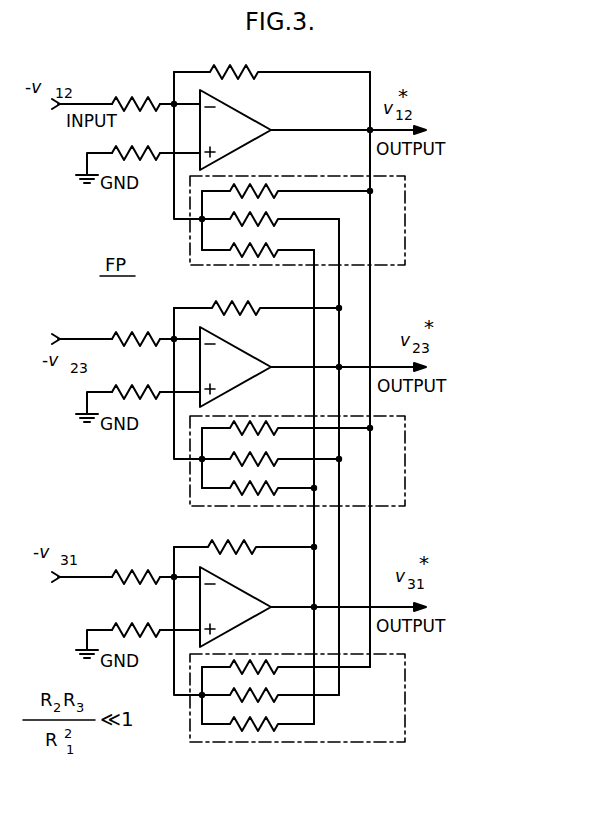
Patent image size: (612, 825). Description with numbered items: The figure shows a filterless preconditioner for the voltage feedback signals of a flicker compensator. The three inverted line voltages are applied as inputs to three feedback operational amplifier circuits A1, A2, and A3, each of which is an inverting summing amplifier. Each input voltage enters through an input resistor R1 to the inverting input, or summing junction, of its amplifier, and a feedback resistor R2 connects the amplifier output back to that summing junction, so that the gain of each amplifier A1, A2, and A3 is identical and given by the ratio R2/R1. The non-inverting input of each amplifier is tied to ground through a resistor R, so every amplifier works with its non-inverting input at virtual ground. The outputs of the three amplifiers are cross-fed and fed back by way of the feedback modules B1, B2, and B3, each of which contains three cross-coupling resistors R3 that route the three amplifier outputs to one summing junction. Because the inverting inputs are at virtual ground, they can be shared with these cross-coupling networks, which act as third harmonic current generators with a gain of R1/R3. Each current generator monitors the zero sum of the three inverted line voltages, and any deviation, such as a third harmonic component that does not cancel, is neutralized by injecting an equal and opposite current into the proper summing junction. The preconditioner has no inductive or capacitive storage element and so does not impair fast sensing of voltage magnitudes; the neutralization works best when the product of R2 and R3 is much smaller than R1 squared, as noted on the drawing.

The input resistor R1 is at (139, 571).
The feedback resistor R2 is at (231, 541).
The cross-coupling feedback resistor R3 is at (270, 187).
The non-inverting input resistor R is at (136, 147).
The feedback operational amplifier circuit A1 is at (235, 130).
The feedback operational amplifier circuit A2 is at (235, 367).
The feedback operational amplifier circuit A3 is at (235, 607).
The feedback module B1 is at (405, 233).
The feedback module B2 is at (405, 466).
The feedback module B3 is at (405, 719).